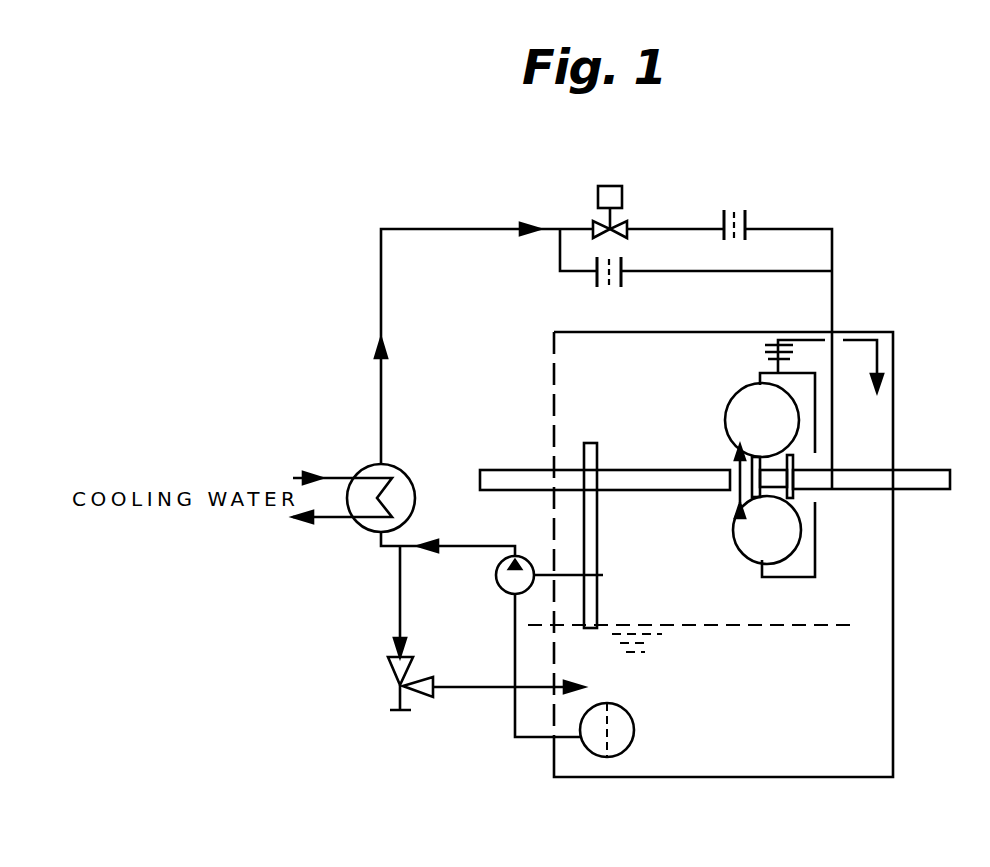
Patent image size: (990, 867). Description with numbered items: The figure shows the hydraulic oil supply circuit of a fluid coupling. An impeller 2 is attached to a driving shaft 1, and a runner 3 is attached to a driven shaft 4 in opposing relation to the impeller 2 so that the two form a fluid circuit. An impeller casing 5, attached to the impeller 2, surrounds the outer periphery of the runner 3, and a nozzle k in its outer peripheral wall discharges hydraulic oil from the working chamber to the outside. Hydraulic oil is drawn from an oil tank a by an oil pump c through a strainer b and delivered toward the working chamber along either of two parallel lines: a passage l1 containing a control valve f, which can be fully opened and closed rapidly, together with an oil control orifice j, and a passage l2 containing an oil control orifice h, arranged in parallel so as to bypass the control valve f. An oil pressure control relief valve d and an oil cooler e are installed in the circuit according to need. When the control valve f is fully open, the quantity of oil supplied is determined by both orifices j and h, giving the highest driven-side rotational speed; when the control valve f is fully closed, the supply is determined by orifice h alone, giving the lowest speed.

The driving shaft 1 is at (500, 470).
The impeller 2 is at (725, 420).
The runner 3 is at (800, 418).
The driven shaft 4 is at (930, 468).
The impeller casing 5 is at (815, 533).
The oil tank a is at (715, 672).
The strainer b is at (635, 745).
The oil pump c is at (500, 590).
The oil pressure control relief valve d is at (395, 712).
The oil cooler e is at (365, 535).
The control valve f is at (598, 196).
The oil control orifice h is at (607, 287).
The oil control orifice j is at (745, 210).
The nozzle k is at (765, 353).
The passage l1 is at (810, 229).
The passage l2 is at (783, 271).